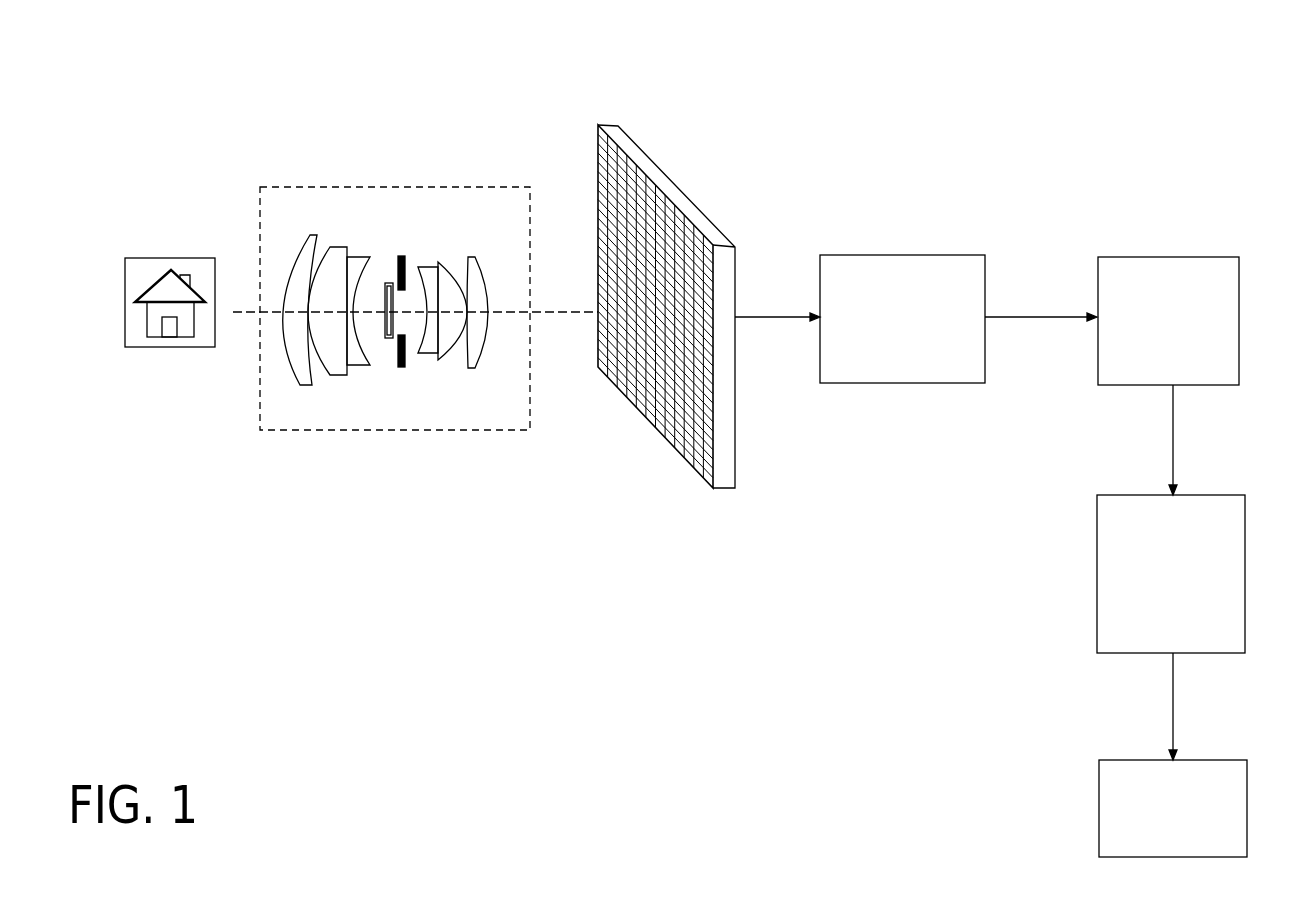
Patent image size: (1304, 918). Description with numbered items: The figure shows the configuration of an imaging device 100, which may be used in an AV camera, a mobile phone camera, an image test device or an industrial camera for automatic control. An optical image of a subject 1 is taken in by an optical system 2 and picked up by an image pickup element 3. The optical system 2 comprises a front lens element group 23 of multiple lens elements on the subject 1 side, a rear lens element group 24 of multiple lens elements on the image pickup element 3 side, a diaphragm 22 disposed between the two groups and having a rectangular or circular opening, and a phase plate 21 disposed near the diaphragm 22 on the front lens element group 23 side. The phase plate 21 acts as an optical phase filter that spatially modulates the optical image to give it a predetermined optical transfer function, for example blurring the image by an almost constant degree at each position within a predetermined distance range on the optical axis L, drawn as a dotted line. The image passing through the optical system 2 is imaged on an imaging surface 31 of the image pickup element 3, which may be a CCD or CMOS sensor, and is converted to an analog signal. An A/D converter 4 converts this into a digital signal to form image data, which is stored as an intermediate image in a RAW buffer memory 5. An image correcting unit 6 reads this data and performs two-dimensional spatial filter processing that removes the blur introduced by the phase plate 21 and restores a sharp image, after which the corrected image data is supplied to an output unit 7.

The imaging device 100 is at (672, 28).
The subject 1 is at (168, 258).
The optical axis L is at (243, 313).
The optical system 2 is at (283, 183).
The phase plate 21 is at (387, 283).
The diaphragm 22 is at (405, 255).
The front lens element group 23 is at (290, 385).
The rear lens element group 24 is at (410, 385).
The image pickup element 3 is at (735, 488).
The imaging surface 31 is at (673, 445).
The A/D converter 4 is at (932, 260).
The RAW buffer memory 5 is at (1180, 262).
The image correcting unit 6 is at (1242, 505).
The output unit 7 is at (1242, 758).